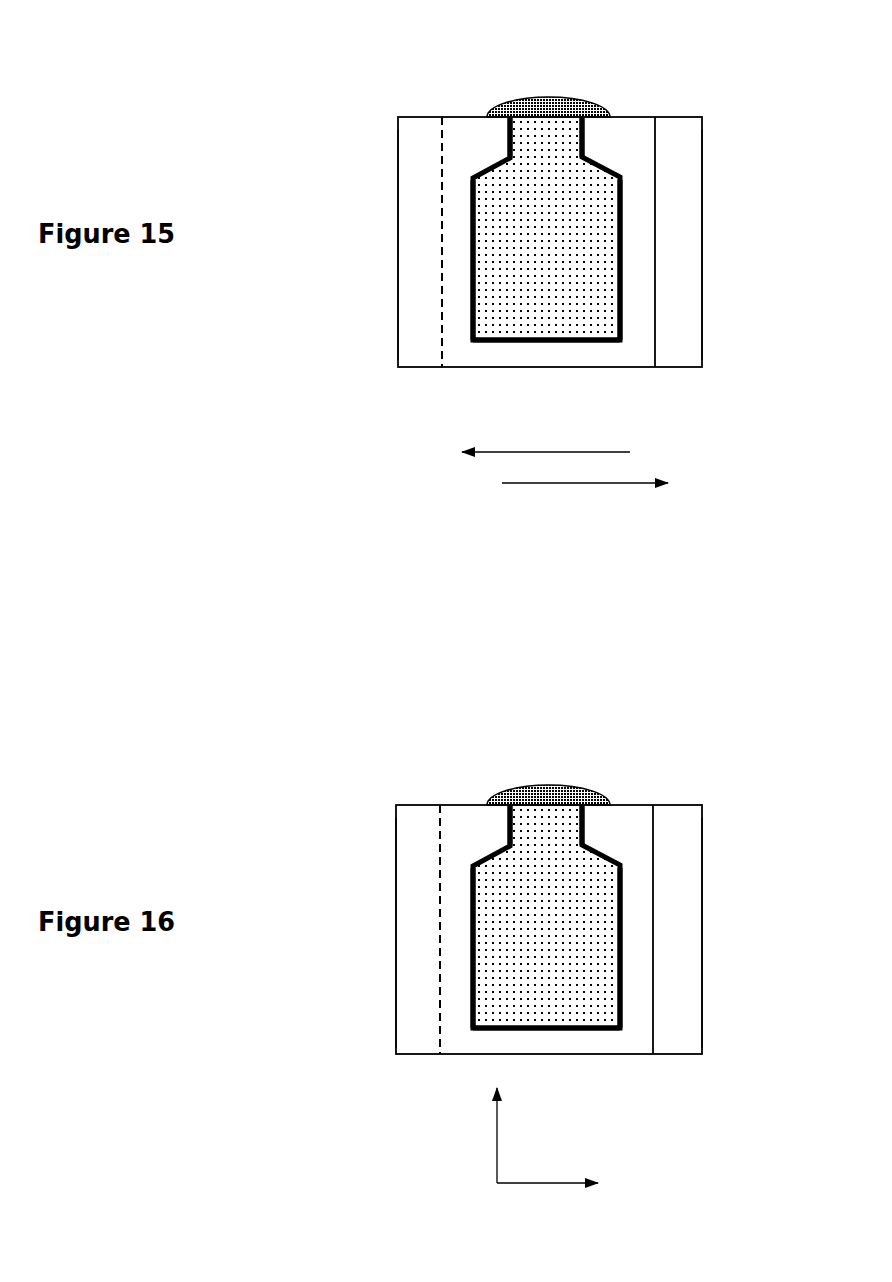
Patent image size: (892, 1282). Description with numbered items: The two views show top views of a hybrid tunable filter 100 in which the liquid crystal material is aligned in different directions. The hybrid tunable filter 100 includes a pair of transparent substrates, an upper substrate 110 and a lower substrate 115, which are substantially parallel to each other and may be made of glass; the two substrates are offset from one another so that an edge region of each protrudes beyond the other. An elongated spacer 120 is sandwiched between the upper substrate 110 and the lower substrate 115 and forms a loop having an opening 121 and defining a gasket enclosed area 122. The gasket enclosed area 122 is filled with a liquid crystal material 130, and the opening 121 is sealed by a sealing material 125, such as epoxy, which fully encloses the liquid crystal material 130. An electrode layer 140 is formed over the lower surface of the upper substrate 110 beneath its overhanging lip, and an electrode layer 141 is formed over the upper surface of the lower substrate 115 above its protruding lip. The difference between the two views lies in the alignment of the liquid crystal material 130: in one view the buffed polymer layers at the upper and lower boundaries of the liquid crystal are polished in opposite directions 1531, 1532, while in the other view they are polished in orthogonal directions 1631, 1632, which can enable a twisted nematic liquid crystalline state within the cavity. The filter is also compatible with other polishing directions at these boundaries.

In FIG. 15, the hybrid tunable filter 100 is at (647, 106).
In FIG. 16, the hybrid tunable filter 100 is at (552, 884).
In FIG. 15, the upper substrate 110 is at (397, 258).
In FIG. 16, the upper substrate 110 is at (339, 933).
In FIG. 15, the lower substrate 115 is at (705, 242).
In FIG. 16, the lower substrate 115 is at (772, 933).
In FIG. 15, the elongated spacer 120 is at (625, 283).
In FIG. 16, the elongated spacer 120 is at (635, 916).
In FIG. 15, the opening 121 is at (543, 134).
In FIG. 16, the opening 121 is at (518, 789).
In FIG. 15, the gasket enclosed area 122 is at (472, 283).
In FIG. 16, the gasket enclosed area 122 is at (459, 948).
In FIG. 15, the sealing material 125 is at (567, 95).
In FIG. 16, the sealing material 125 is at (551, 756).
In FIG. 15, the liquid crystal material 130 is at (590, 343).
In FIG. 16, the liquid crystal material 130 is at (578, 1083).
In FIG. 15, the electrode layer 140 is at (418, 170).
In FIG. 16, the electrode layer 140 is at (371, 923).
In FIG. 15, the electrode layer 141 is at (678, 182).
In FIG. 16, the electrode layer 141 is at (725, 929).
In FIG. 15, the opposite direction 1531 is at (492, 458).
In FIG. 15, the opposite direction 1532 is at (598, 490).
In FIG. 16, the orthogonal direction 1631 is at (490, 1146).
In FIG. 16, the orthogonal direction 1632 is at (560, 1190).